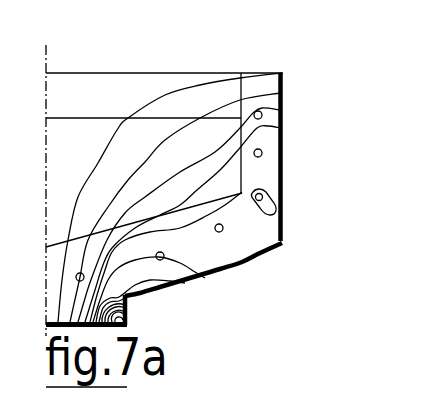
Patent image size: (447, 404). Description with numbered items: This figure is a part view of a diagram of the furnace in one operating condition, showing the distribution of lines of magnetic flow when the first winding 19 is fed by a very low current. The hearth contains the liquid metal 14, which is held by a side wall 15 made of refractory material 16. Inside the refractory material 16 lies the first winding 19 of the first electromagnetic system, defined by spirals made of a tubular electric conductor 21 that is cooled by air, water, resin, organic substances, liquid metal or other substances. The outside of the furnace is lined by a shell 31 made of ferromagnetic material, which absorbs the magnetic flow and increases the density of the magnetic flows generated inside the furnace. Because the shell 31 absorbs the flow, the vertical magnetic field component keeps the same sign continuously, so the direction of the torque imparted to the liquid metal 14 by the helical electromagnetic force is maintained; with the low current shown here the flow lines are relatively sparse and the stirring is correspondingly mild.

The liquid metal 14 is at (62, 135).
The side wall 15 is at (290, 152).
The refractory material 16 is at (246, 248).
The first winding 19 is at (258, 107).
The tubular electric conductor 21 is at (219, 232).
The shell 31 is at (284, 218).